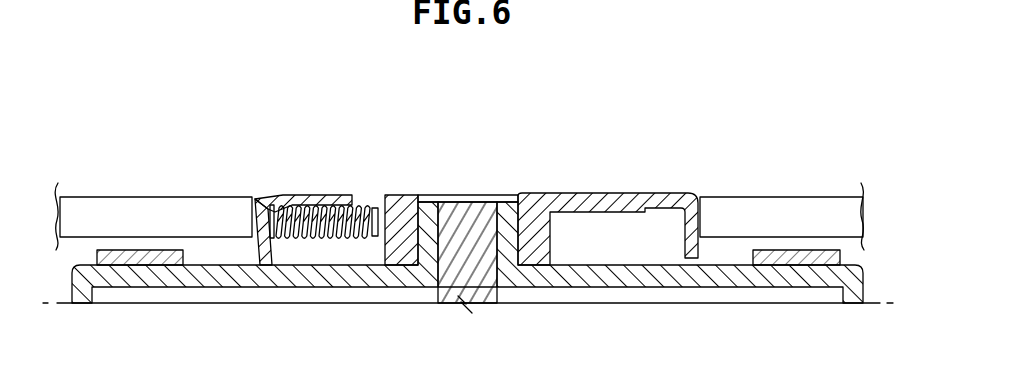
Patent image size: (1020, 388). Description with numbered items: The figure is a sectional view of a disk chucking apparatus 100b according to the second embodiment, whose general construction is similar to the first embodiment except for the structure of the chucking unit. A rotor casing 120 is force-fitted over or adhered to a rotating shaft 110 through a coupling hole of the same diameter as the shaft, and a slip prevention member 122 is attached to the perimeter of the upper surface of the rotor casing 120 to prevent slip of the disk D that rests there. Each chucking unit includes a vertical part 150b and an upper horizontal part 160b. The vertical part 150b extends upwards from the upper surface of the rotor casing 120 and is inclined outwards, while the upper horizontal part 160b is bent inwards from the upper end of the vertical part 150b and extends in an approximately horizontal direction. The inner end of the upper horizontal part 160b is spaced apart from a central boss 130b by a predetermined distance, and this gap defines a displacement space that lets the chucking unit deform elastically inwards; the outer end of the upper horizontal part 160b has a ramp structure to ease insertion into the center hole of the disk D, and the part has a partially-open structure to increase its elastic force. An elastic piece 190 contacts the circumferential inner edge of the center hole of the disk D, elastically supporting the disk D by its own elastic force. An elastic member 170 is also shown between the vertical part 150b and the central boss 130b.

The disk chucking apparatus 100b is at (203, 92).
The disk D is at (122, 213).
The rotating shaft 110 is at (470, 215).
The rotor casing 120 is at (257, 275).
The slip prevention member 122 is at (143, 260).
The central boss 130b is at (400, 207).
The vertical part 150b is at (253, 220).
The upper horizontal part 160b is at (308, 198).
The elastic member 170 is at (373, 208).
The elastic piece 190 is at (698, 210).